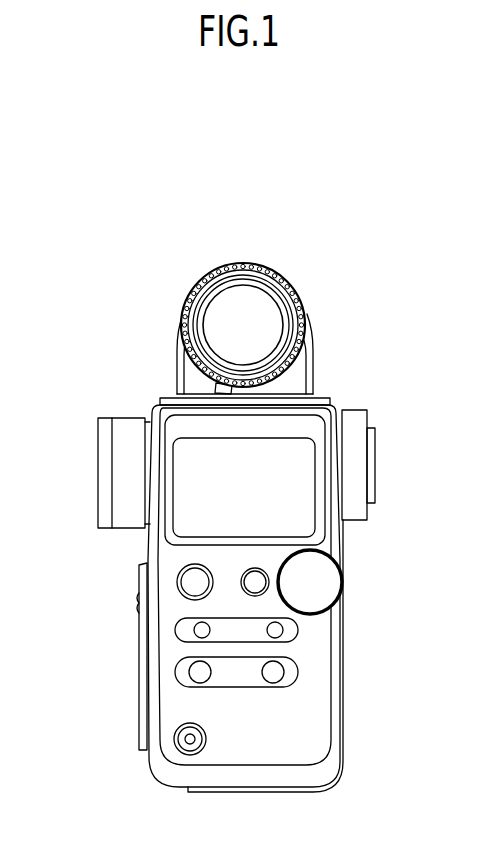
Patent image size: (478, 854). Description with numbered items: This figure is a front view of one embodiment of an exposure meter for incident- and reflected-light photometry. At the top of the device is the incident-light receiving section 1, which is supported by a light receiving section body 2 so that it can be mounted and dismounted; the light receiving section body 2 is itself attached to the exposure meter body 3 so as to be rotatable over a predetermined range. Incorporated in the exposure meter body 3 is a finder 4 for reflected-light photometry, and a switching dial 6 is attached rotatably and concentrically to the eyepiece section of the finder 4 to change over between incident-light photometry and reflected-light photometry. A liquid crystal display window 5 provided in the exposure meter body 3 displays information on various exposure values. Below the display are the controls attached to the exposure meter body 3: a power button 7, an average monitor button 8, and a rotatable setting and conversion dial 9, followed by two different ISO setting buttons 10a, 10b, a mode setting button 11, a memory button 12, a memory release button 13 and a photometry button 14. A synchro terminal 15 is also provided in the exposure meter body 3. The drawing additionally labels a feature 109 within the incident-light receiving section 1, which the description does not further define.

The incident-light receiving section 1 is at (186, 283).
The light receiving section body 2 is at (165, 373).
The exposure meter body 3 is at (150, 783).
The finder 4 is at (100, 457).
The liquid crystal display window 5 is at (267, 457).
The switching dial 6 is at (357, 453).
The power button 7 is at (190, 581).
The average monitor button 8 is at (257, 581).
The setting and conversion dial 9 is at (328, 588).
The ISO setting button 10a is at (195, 631).
The ISO setting button 10b is at (285, 637).
The mode setting button 11 is at (195, 672).
The memory button 12 is at (281, 680).
The memory release button 13 is at (143, 588).
The photometry button 14 is at (347, 543).
The synchro terminal 15 is at (176, 739).
The light receiving window 109 is at (264, 312).